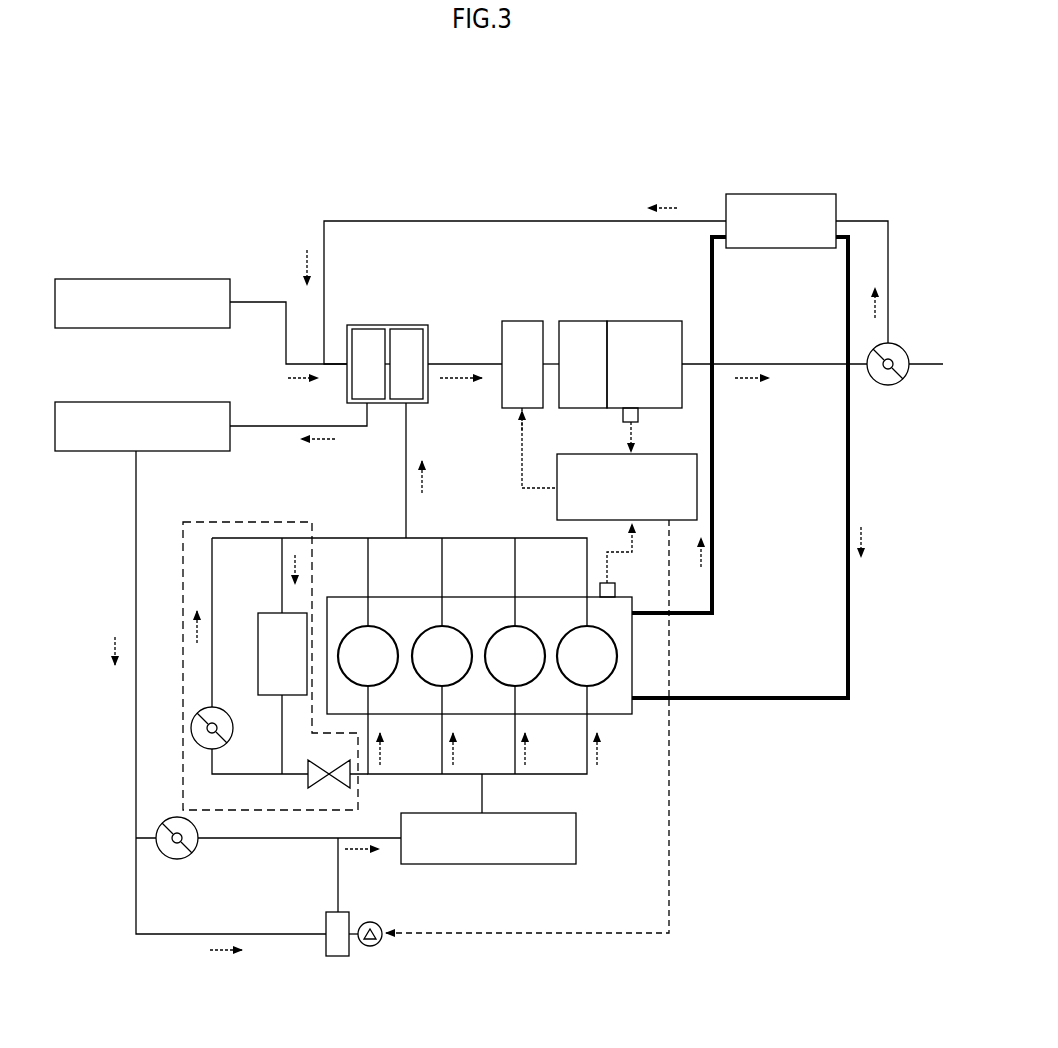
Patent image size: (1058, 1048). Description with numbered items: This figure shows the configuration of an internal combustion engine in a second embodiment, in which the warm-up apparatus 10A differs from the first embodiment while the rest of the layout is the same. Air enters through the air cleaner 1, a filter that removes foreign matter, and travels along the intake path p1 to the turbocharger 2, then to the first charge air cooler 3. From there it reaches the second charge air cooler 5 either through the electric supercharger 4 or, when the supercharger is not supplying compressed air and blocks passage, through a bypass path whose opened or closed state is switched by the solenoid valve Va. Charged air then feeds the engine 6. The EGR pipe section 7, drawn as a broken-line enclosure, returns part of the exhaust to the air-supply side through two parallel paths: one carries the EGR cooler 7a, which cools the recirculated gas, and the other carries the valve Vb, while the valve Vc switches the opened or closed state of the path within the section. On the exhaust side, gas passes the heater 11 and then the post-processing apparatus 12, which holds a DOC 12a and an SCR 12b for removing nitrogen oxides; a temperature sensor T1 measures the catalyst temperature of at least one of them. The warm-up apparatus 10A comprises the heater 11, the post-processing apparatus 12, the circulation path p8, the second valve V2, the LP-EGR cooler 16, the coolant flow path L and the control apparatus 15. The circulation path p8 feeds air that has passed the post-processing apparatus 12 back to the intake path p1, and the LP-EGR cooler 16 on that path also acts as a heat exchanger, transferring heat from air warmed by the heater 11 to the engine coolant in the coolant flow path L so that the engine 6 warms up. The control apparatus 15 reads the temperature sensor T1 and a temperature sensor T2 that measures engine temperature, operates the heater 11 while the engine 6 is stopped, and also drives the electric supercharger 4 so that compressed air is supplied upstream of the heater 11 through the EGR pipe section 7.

The air cleaner 1 is at (131, 279).
The turbocharger 2 is at (386, 325).
The first charge air cooler 3 is at (166, 402).
The electric supercharger 4 is at (372, 946).
The second charge air cooler 5 is at (515, 864).
The engine 6 is at (618, 714).
The EGR pipe section 7 is at (288, 508).
The EGR cooler 7a is at (267, 612).
The warm-up apparatus 10A is at (465, 188).
The heater 11 is at (522, 321).
The post-processing apparatus 12 is at (620, 327).
The DOC 12a is at (598, 321).
The SCR 12b is at (651, 321).
The control apparatus 15 is at (557, 503).
The LP-EGR cooler 16 is at (753, 194).
The intake path p1 is at (267, 302).
The circulation path p8 is at (540, 221).
The coolant flow path L is at (852, 430).
The temperature sensor T1 is at (639, 418).
The temperature sensor T2 is at (615, 590).
The second valve V2 is at (895, 345).
The valve Va is at (180, 860).
The valve Vb is at (216, 708).
The valve Vc is at (308, 786).